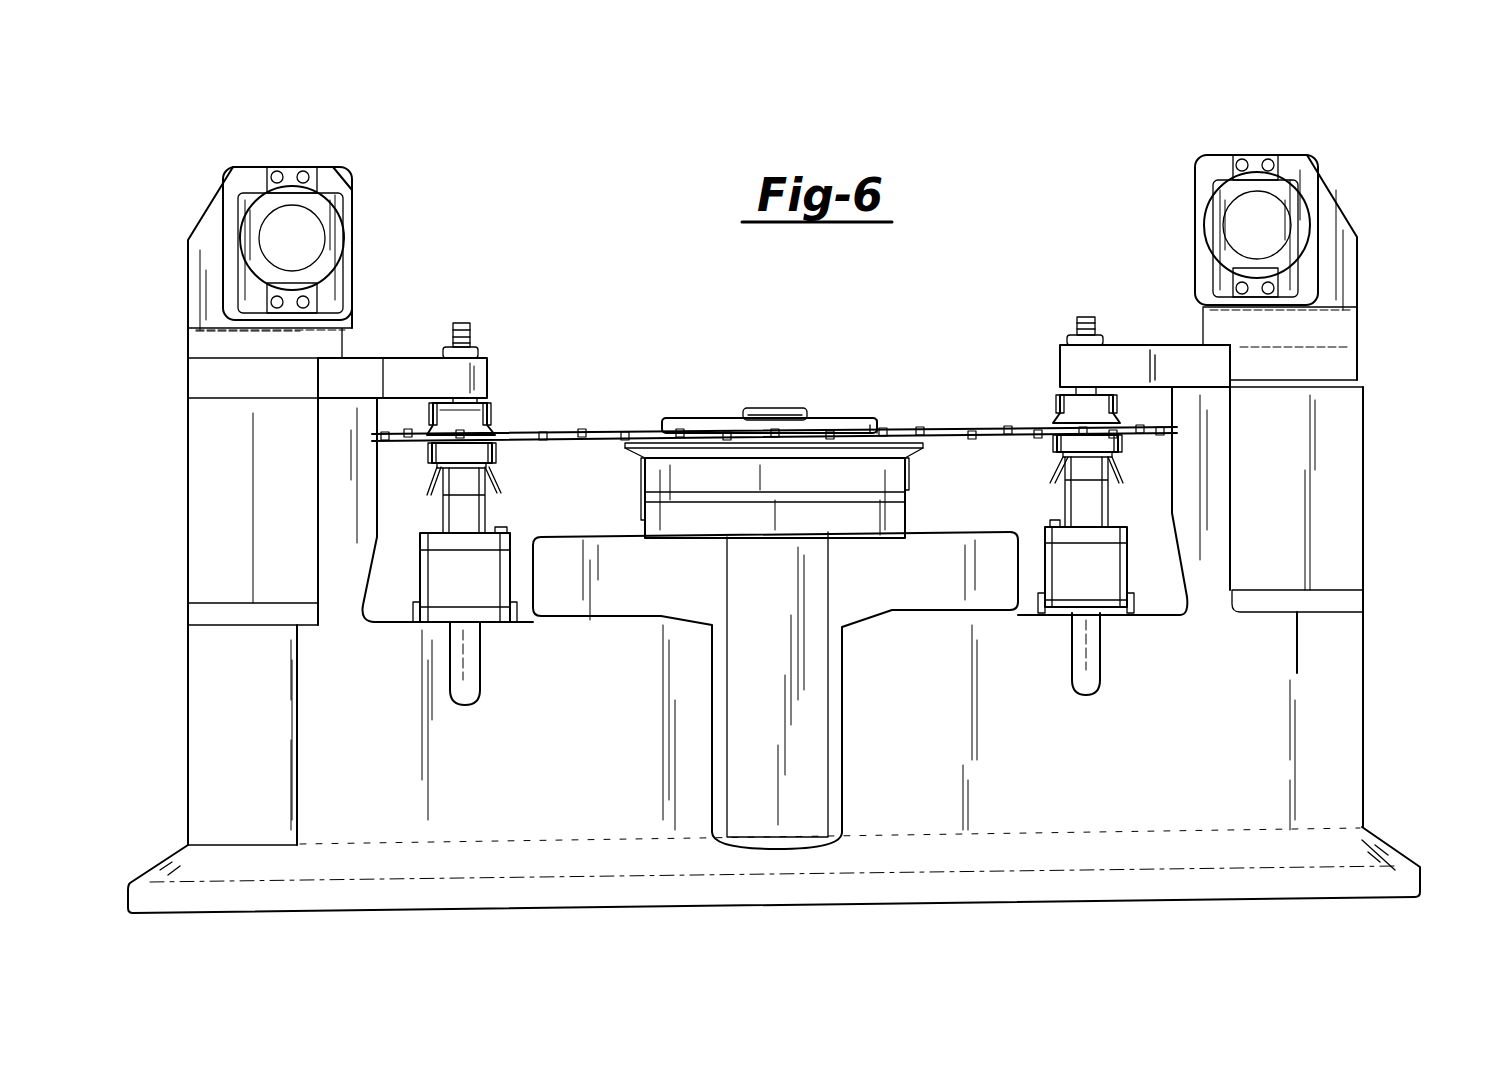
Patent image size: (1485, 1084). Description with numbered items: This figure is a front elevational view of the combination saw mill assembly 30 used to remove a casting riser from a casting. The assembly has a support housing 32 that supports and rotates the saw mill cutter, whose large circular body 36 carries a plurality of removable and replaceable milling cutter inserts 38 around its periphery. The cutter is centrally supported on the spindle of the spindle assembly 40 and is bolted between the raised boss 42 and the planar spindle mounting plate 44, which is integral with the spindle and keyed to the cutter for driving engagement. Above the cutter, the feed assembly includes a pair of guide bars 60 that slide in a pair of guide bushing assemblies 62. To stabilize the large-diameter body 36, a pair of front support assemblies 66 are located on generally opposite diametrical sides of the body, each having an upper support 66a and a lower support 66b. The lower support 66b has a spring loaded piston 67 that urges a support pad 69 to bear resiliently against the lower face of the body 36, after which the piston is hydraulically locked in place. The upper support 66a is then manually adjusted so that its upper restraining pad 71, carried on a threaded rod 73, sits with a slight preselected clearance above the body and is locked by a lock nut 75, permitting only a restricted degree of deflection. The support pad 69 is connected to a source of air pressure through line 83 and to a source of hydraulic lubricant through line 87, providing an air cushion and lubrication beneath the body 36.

The combination saw mill assembly 30 is at (1392, 713).
The support housing 32 is at (1340, 675).
The circular body 36 is at (953, 428).
The milling cutter inserts 38 is at (883, 430).
The spindle assembly 40 is at (812, 725).
The raised boss 42 is at (718, 378).
The spindle mounting plate 44 is at (658, 475).
The guide bars 60 is at (305, 253).
The guide bushing assemblies 62 is at (333, 180).
The front support assemblies 66 is at (487, 372).
The upper support 66a is at (492, 415).
The lower support 66b is at (493, 455).
The spring loaded piston 67 is at (433, 470).
The support pad 69 is at (433, 447).
The upper restraining pad 71 is at (428, 413).
The threaded rod 73 is at (463, 323).
The lock nut 75 is at (443, 347).
The air pressure line 83 is at (427, 492).
The hydraulic lubricant line 87 is at (500, 482).